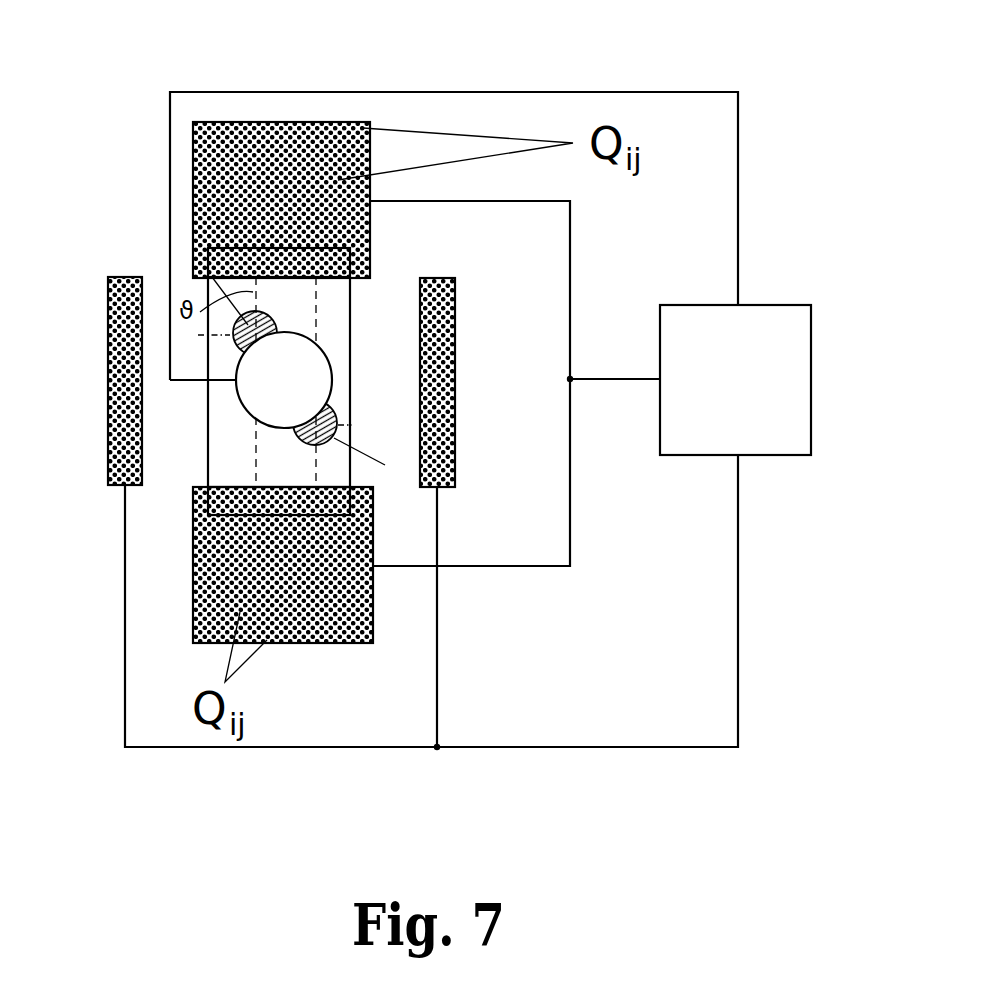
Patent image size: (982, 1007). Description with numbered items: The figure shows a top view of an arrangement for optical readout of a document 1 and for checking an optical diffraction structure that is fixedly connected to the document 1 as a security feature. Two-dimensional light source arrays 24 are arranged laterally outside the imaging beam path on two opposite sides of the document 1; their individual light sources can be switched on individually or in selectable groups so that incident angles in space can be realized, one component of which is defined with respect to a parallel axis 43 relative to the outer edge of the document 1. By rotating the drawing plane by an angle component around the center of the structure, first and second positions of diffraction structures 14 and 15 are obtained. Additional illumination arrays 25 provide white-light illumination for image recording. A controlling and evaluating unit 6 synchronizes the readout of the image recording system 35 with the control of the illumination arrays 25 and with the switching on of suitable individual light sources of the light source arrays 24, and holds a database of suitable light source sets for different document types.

The document 1 is at (310, 387).
The controlling and evaluating unit 6 is at (763, 318).
The first position of diffraction structure 14 is at (243, 347).
The second position of diffraction structure 15 is at (316, 318).
The light source array 24 is at (278, 122).
The illumination array 25 is at (127, 277).
The image recording system 35 is at (352, 343).
The parallel axis 43 is at (255, 452).